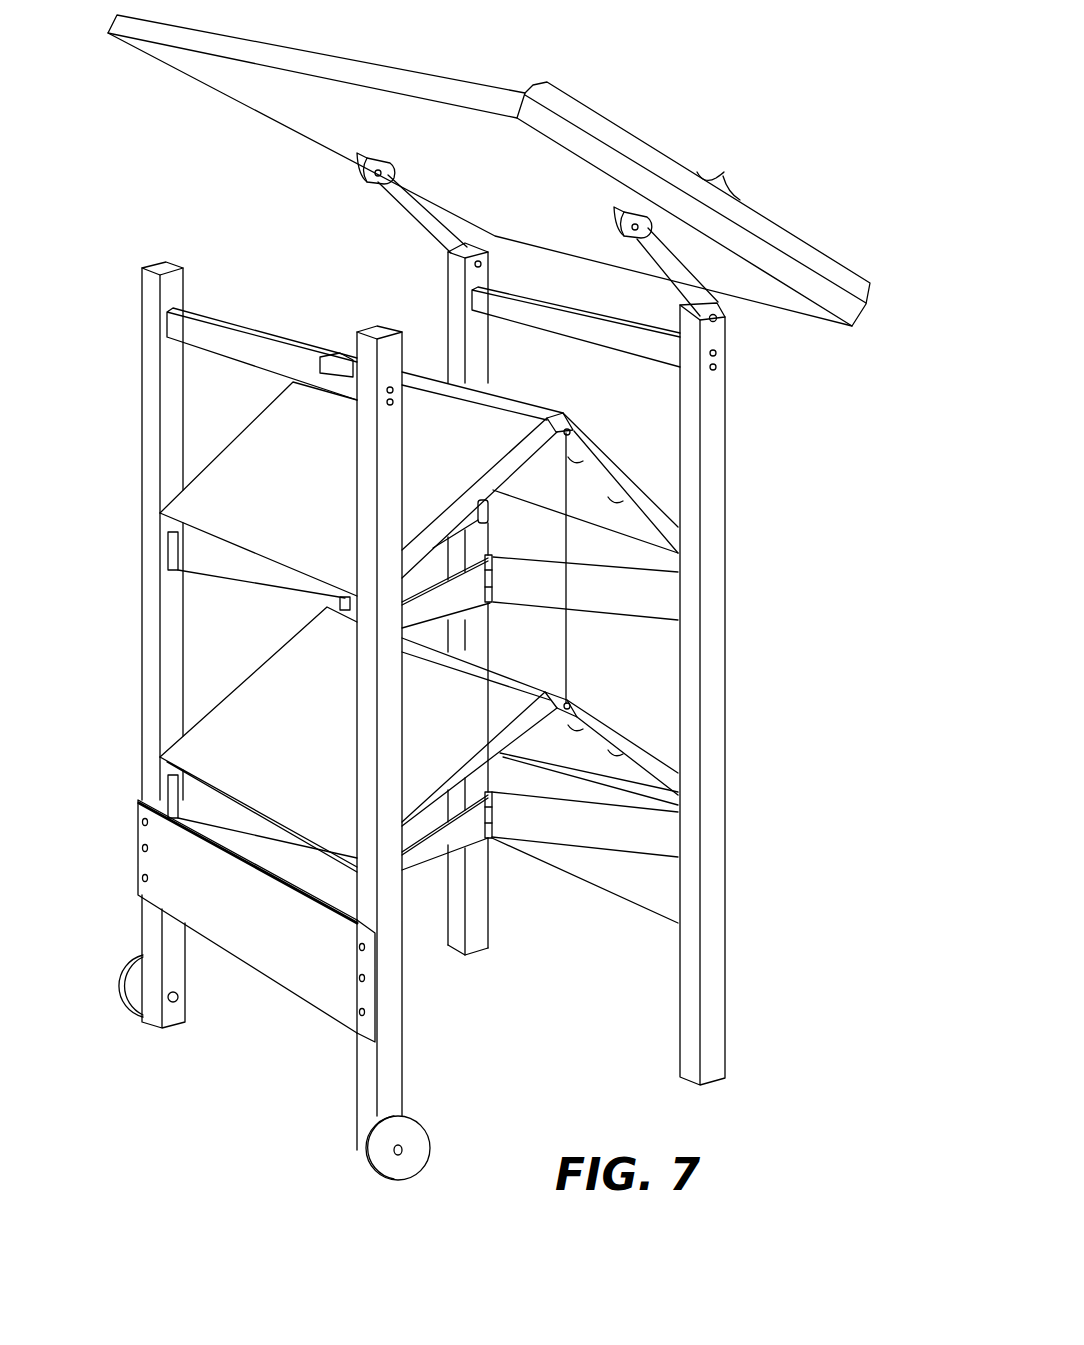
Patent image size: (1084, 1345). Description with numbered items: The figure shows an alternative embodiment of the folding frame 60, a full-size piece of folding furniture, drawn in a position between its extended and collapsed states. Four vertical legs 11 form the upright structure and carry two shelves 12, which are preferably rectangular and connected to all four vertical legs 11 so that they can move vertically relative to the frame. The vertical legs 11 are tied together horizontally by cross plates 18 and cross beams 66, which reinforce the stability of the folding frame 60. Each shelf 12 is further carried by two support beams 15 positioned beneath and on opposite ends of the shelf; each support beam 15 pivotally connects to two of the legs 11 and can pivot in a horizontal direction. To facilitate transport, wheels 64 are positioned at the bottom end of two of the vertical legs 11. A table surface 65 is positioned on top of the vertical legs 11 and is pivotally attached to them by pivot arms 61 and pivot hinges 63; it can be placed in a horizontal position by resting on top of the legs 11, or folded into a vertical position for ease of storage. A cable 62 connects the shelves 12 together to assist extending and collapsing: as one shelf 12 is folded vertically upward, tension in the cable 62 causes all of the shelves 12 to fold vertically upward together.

The vertical legs 11 is at (145, 323).
The shelves 12 is at (222, 477).
The support beams 15 is at (185, 562).
The cross plates 18 is at (282, 962).
The folding frame 60 is at (657, 78).
The pivot arms 61 is at (405, 213).
The cable 62 is at (340, 597).
The pivot hinges 63 is at (368, 180).
The wheels 64 is at (137, 958).
The table surface 65 is at (721, 175).
The cross beams 66 is at (247, 363).